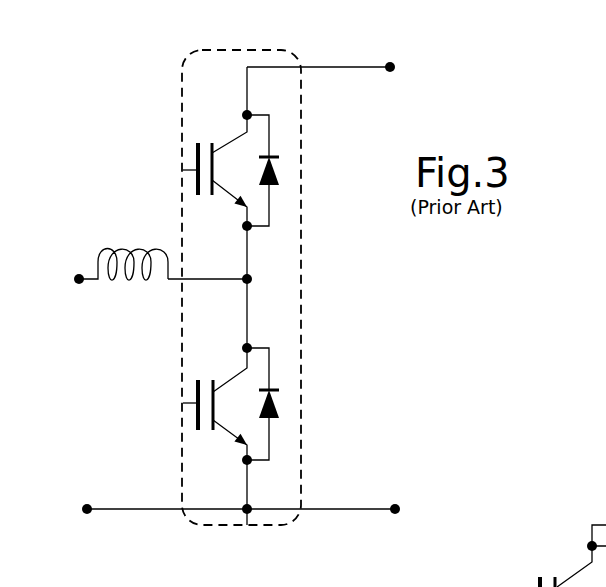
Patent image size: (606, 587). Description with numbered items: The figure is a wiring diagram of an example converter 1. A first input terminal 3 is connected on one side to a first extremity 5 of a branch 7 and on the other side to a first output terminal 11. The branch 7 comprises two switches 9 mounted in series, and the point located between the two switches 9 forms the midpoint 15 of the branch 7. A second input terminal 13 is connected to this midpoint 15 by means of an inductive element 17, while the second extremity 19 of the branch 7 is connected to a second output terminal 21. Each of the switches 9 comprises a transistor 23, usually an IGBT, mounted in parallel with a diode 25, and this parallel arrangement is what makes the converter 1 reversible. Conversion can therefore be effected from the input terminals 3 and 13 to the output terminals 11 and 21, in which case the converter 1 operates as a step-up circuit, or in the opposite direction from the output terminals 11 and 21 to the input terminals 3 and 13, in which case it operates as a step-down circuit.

The converter 1 is at (415, 293).
The first input terminal 3 is at (87, 505).
The first extremity 5 is at (247, 525).
The branch 7 is at (185, 63).
The switches 9 is at (221, 117).
The first output terminal 11 is at (395, 505).
The second input terminal 13 is at (79, 284).
The midpoint 15 is at (250, 279).
The inductive element 17 is at (102, 258).
The second extremity 19 is at (250, 113).
The second output terminal 21 is at (391, 62).
The transistor 23 is at (192, 161).
The diode 25 is at (280, 170).